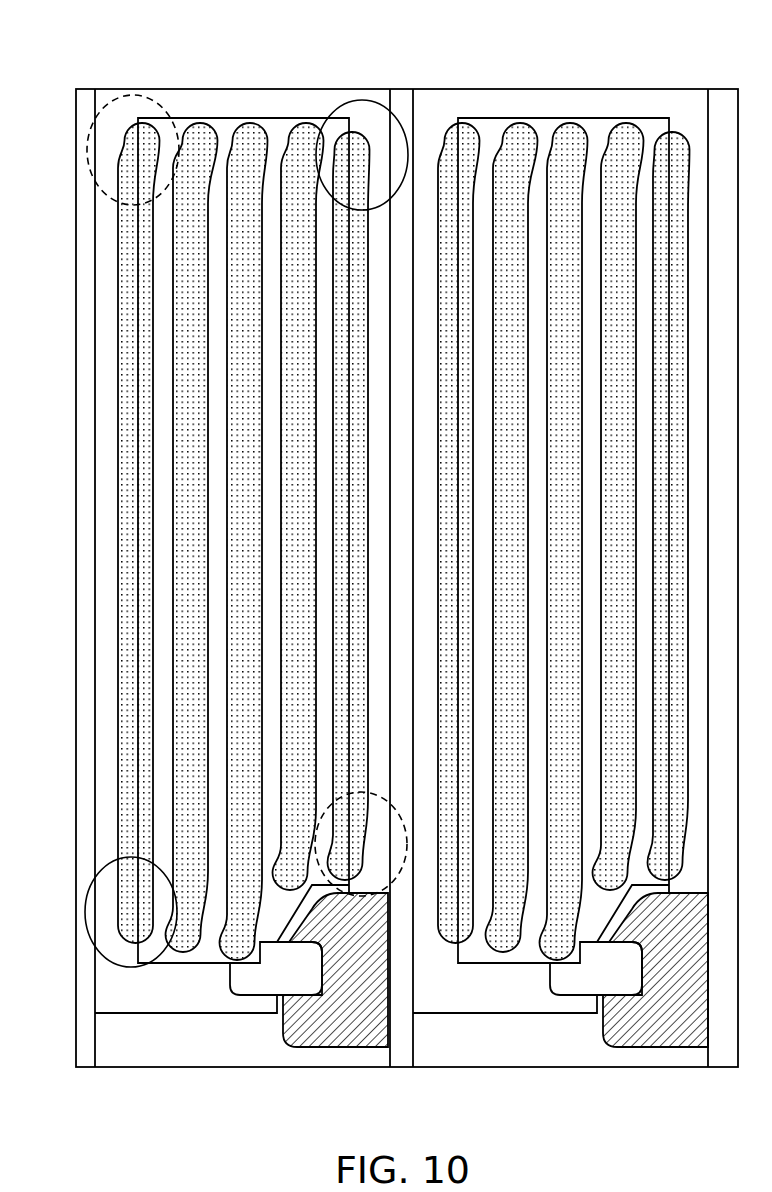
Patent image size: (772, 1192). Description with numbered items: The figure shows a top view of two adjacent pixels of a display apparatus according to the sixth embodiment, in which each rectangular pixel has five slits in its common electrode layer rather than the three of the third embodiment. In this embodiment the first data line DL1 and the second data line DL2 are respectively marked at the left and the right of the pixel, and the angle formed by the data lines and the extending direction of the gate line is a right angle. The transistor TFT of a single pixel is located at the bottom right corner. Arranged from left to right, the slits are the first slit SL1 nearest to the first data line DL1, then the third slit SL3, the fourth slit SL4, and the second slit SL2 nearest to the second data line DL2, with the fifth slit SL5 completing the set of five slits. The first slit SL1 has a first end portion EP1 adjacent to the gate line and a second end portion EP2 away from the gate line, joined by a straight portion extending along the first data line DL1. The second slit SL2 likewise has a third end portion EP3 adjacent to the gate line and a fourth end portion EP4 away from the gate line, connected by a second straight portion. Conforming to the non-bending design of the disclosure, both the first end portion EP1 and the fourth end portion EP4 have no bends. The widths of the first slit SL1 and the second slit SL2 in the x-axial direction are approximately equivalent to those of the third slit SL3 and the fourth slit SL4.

The first slit SL1 is at (146, 109).
The second slit SL2 is at (341, 128).
The third slit SL3 is at (204, 109).
The fourth slit SL4 is at (298, 120).
The fifth slit SL5 is at (254, 109).
The first end portion EP1 is at (88, 893).
The second end portion EP2 is at (108, 200).
The third end portion EP3 is at (403, 880).
The fourth end portion EP4 is at (363, 101).
The first data line DL1 is at (88, 396).
The second data line DL2 is at (402, 102).
The transistor TFT is at (337, 1040).